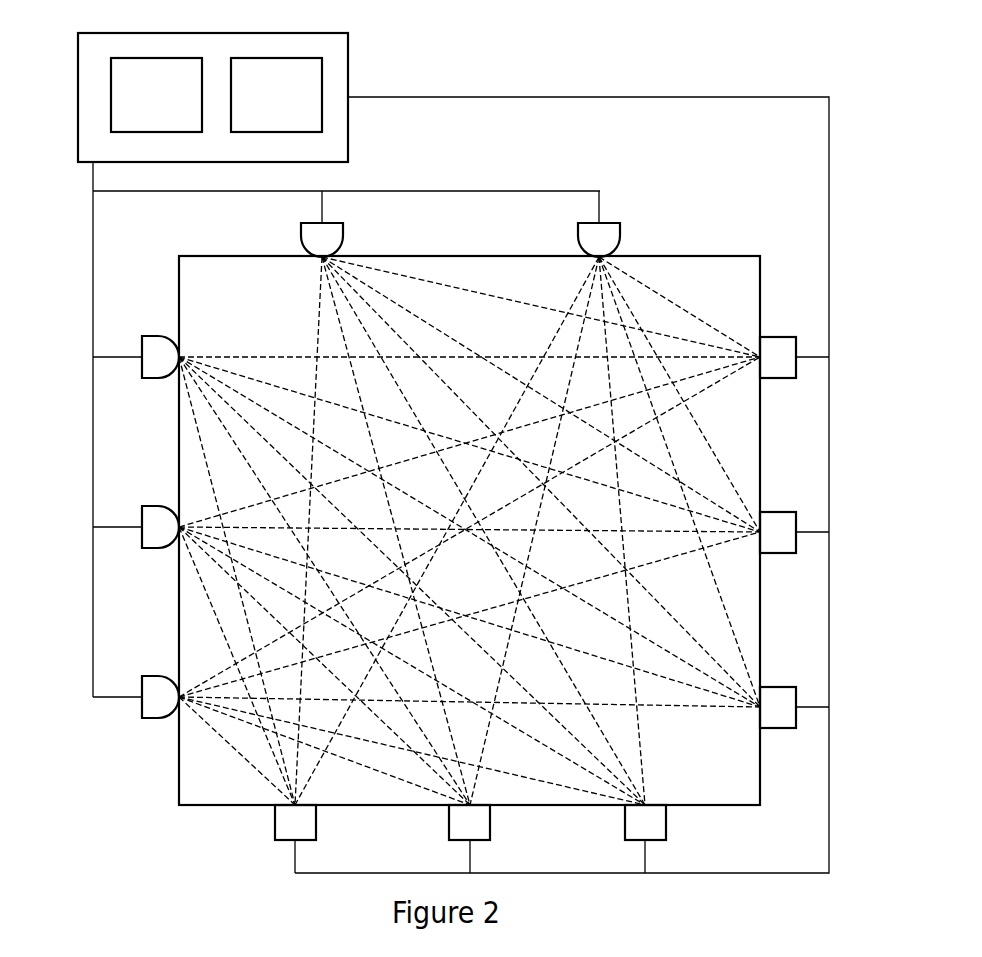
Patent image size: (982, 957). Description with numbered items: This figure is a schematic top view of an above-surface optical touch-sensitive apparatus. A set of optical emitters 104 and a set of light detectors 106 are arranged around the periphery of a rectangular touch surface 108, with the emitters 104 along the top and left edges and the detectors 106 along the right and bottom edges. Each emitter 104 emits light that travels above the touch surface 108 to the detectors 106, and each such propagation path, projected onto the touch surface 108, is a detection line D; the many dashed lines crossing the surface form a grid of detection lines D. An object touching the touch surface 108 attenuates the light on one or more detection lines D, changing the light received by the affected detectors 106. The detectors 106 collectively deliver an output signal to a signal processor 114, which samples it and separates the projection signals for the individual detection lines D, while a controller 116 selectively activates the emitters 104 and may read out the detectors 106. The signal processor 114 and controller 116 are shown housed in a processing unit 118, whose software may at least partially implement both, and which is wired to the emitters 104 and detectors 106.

The optical emitter 104 is at (343, 236).
The light detector 106 is at (777, 687).
The touch surface 108 is at (198, 786).
The signal processor 114 is at (156, 95).
The controller 116 is at (276, 95).
The processing unit 118 is at (350, 78).
The detection line D is at (645, 735).